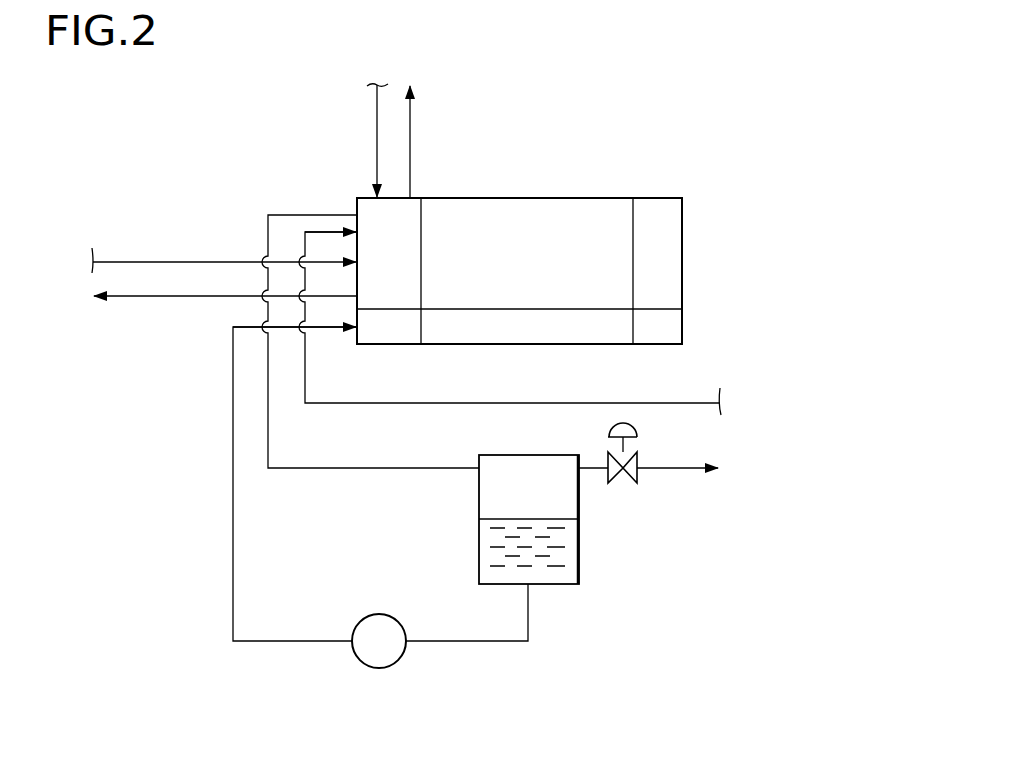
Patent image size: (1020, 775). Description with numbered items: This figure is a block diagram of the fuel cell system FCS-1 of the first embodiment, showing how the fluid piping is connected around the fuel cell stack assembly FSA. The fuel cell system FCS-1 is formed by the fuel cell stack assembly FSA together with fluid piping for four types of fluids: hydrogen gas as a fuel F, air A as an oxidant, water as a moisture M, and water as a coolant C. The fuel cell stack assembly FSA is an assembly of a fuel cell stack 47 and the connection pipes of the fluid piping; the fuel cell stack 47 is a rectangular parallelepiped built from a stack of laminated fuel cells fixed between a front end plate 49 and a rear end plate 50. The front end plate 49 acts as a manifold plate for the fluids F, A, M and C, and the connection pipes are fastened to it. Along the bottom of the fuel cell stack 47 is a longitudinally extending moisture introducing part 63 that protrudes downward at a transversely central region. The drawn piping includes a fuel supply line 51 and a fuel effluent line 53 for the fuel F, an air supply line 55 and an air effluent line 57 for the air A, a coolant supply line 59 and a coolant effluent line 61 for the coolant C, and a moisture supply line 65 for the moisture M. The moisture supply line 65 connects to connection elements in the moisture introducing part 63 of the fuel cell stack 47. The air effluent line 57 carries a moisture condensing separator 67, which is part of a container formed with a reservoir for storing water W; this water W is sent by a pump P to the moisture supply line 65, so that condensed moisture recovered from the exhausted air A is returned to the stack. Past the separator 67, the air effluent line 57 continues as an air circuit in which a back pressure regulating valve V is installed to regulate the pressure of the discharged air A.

The fuel cell stack 47 is at (519, 197).
The front end plate 49 is at (364, 204).
The rear end plate 50 is at (683, 260).
The fuel supply line 51 is at (376, 137).
The fuel effluent line 53 is at (411, 158).
The air supply line 55 is at (355, 405).
The air effluent line 57 is at (318, 470).
The coolant supply line 59 is at (205, 262).
The coolant effluent line 61 is at (205, 300).
The moisture introducing part 63 is at (383, 348).
The moisture supply line 65 is at (233, 574).
The moisture condensing separator 67 is at (580, 560).
The fuel cell system FCS-1 is at (593, 115).
The fuel cell stack assembly FSA is at (638, 190).
The fuel F is at (376, 100).
The coolant C is at (135, 262).
The air A is at (567, 403).
The moisture M is at (233, 455).
The pump P is at (440, 626).
The back pressure regulating valve V is at (628, 480).
The water W is at (580, 500).